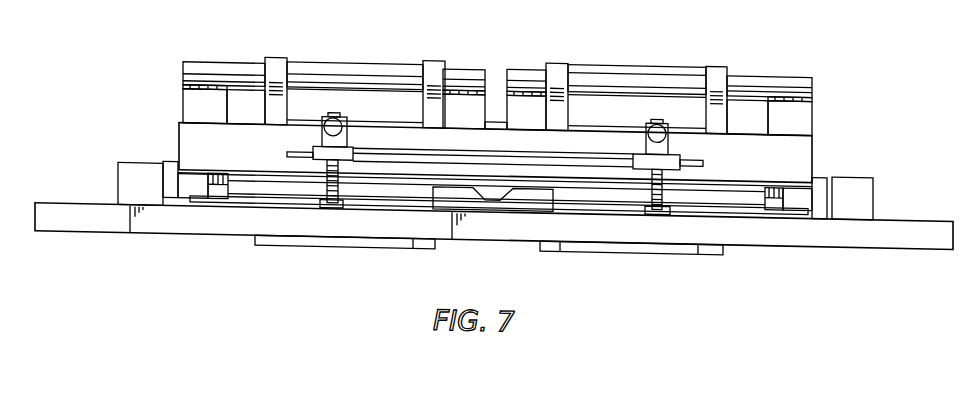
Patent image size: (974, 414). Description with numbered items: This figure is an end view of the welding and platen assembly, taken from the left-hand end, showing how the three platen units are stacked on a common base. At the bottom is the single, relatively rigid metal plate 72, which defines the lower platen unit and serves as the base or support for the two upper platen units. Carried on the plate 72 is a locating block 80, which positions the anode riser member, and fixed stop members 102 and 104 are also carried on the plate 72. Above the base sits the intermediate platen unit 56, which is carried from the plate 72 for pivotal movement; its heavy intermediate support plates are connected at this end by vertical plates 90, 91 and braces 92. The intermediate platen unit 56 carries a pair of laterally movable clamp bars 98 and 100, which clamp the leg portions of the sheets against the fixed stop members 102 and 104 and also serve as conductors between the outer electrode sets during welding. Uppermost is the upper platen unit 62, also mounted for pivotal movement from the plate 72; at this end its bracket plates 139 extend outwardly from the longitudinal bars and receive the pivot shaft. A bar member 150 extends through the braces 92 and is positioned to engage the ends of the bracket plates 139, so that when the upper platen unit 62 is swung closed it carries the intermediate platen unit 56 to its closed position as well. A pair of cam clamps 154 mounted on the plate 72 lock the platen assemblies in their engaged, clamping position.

The plate 72 is at (893, 225).
The fixed stop member 102 is at (133, 170).
The fixed stop member 104 is at (858, 182).
The clamp bar 98 is at (175, 198).
The clamp bar 100 is at (812, 197).
The intermediate platen unit 56 is at (813, 156).
The locating block 80 is at (533, 196).
The upper platen unit 62 is at (832, 125).
The cam clamp 154 is at (348, 111).
The brace 92 is at (283, 57).
The bar member 150 is at (188, 69).
The vertical plate 91 is at (365, 50).
The vertical plate 90 is at (650, 54).
The bracket plate 139 is at (195, 104).